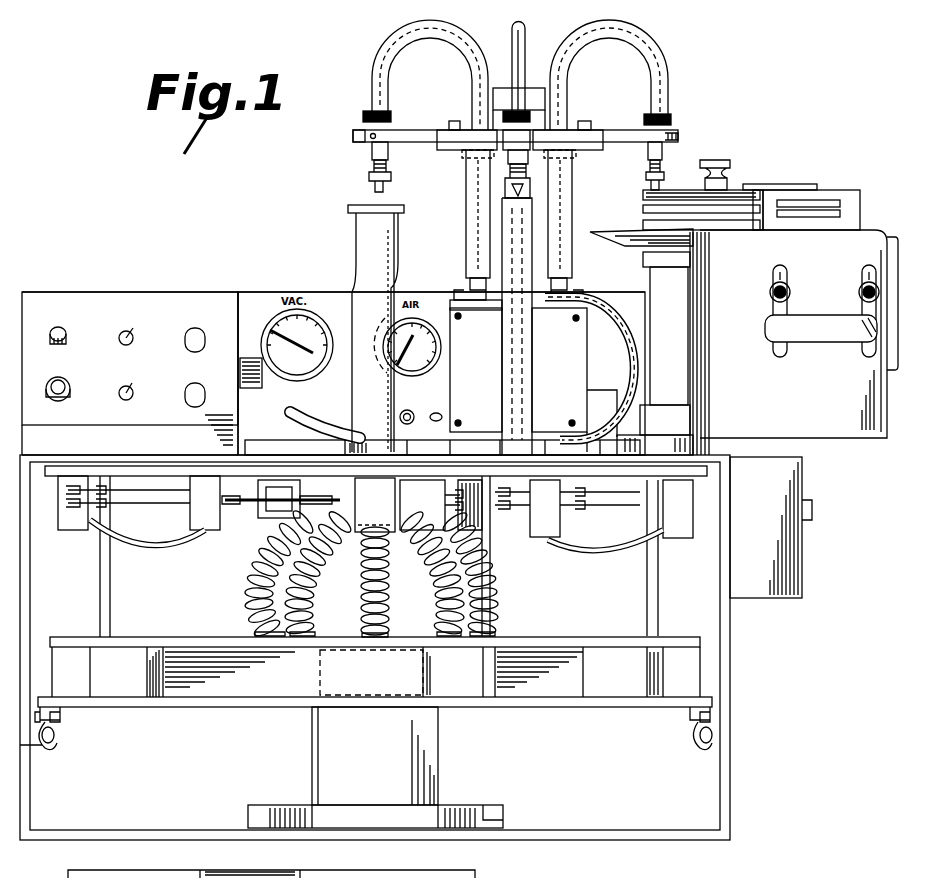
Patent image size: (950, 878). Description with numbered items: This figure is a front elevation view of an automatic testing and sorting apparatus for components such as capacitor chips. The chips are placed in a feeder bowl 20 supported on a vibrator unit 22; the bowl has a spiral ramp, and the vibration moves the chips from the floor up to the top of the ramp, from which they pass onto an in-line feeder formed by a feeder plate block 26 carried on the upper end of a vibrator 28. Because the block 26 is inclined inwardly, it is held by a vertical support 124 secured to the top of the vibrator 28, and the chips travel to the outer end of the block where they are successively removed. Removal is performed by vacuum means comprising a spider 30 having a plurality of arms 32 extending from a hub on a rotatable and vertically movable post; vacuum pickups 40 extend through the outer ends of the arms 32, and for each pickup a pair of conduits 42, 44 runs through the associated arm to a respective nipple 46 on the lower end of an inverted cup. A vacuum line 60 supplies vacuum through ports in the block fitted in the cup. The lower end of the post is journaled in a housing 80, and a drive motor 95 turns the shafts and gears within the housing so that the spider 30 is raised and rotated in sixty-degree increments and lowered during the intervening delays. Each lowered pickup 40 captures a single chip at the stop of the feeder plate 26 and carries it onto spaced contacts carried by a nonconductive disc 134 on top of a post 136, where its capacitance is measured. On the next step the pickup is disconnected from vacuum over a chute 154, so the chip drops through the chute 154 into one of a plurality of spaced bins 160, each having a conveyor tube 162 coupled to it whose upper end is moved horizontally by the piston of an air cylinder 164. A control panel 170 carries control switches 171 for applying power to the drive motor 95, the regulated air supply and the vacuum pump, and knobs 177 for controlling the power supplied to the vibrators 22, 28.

The feeder bowl 20 is at (638, 232).
The vibrator unit 22 is at (688, 256).
The feeder plate block 26 is at (812, 196).
The vibrator 28 is at (808, 326).
The spider 30 is at (350, 135).
The arms 32 is at (614, 130).
The vacuum pickups 40 is at (362, 150).
The conduit 42 is at (515, 32).
The conduit 44 is at (466, 236).
The nipple 46 is at (466, 285).
The vacuum line 60 is at (585, 300).
The housing 80 is at (470, 310).
The drive motor 95 is at (795, 578).
The vertical support 124 is at (868, 192).
The nonconductive disc 134 is at (505, 196).
The post 136 is at (508, 360).
The chute 154 is at (348, 228).
The bins 160 is at (152, 690).
The conveyor tube 162 is at (252, 592).
The air cylinder 164 is at (70, 535).
The control panel 170 is at (243, 300).
The control switches 171 is at (134, 333).
The knobs 177 is at (250, 390).